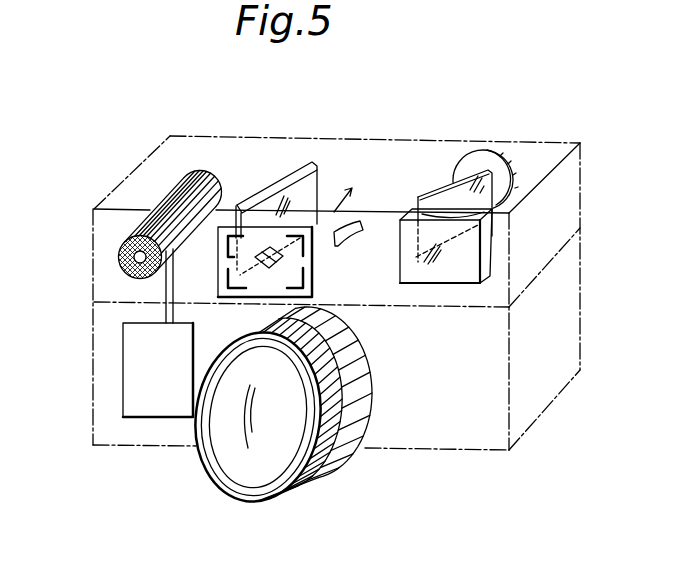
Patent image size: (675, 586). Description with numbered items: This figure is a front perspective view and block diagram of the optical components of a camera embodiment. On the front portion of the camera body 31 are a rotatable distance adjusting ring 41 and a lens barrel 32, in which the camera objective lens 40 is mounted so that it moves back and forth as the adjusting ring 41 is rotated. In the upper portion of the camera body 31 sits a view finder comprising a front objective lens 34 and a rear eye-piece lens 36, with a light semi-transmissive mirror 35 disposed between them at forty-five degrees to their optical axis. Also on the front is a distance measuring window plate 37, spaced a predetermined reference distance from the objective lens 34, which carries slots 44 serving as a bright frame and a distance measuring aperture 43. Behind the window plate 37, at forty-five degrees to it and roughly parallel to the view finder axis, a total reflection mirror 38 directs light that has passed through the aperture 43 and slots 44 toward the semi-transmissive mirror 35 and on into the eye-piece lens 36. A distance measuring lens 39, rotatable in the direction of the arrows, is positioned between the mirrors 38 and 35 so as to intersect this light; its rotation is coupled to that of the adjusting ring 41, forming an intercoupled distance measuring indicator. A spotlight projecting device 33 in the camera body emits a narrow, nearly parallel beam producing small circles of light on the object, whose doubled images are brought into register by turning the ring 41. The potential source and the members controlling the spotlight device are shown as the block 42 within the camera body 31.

The camera body 31 is at (465, 438).
The lens barrel 32 is at (352, 443).
The spotlight projecting device 33 is at (213, 181).
The front objective lens 34 is at (468, 276).
The light semi-transmissive mirror 35 is at (437, 197).
The rear eye-piece lens 36 is at (508, 162).
The distance measuring window plate 37 is at (313, 257).
The total reflection mirror 38 is at (290, 187).
The distance measuring lens 39 is at (363, 197).
The camera objective lens 40 is at (258, 467).
The distance adjusting ring 41 is at (320, 475).
The control mechanism 42 is at (124, 380).
The distance measuring aperture 43 is at (266, 267).
The slots 44 is at (313, 293).